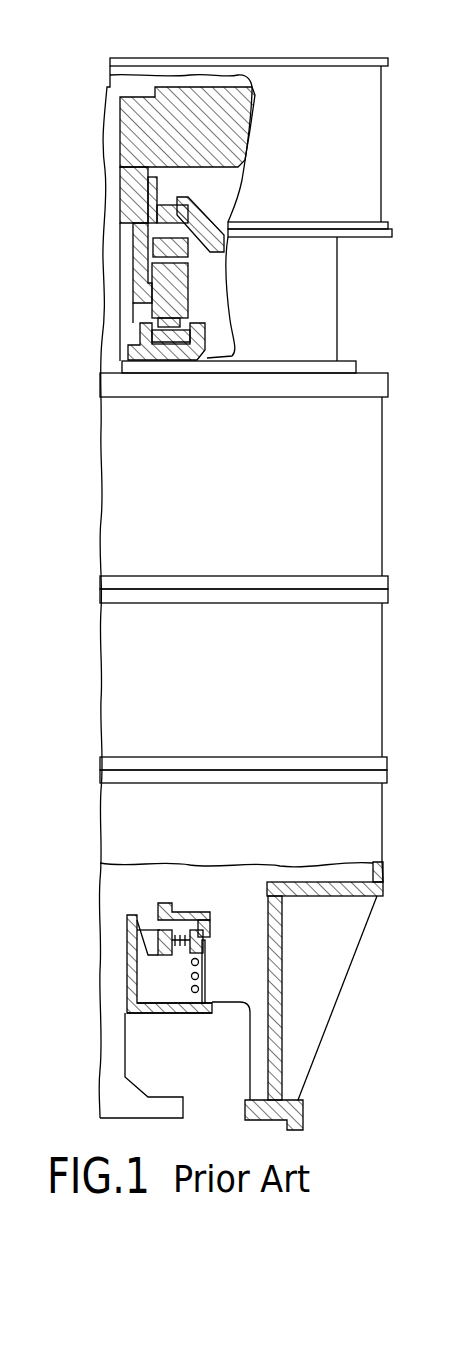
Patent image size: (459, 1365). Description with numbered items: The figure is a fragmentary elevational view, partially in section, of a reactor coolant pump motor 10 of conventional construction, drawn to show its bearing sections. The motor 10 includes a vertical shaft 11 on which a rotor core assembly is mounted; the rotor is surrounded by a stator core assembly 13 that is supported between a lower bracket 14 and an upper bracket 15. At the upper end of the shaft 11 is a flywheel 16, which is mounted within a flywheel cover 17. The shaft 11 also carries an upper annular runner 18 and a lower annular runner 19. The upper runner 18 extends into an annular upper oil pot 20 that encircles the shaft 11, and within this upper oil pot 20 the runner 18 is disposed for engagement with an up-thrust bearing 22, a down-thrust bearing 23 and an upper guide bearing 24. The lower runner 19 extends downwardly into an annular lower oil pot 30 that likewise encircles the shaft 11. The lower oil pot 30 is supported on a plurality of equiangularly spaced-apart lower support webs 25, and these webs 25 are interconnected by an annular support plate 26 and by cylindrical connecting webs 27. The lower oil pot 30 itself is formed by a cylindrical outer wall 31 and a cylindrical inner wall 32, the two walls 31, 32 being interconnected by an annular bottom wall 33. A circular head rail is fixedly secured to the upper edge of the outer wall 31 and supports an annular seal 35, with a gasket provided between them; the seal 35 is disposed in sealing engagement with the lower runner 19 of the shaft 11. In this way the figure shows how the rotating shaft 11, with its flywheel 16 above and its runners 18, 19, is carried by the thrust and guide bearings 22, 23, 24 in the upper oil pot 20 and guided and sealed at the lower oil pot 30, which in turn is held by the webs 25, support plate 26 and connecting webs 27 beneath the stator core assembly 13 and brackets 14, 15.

The reactor coolant pump motor 10 is at (357, 336).
The vertical shaft 11 is at (112, 323).
The stator core assembly 13 is at (357, 658).
The lower bracket 14 is at (367, 820).
The upper bracket 15 is at (360, 503).
The flywheel 16 is at (222, 90).
The flywheel cover 17 is at (373, 122).
The upper annular runner 18 is at (128, 268).
The lower annular runner 19 is at (148, 932).
The upper oil pot 20 is at (323, 267).
The up-thrust bearing 22 is at (200, 312).
The down-thrust bearing 23 is at (200, 276).
The upper guide bearing 24 is at (120, 207).
The lower support webs 25 is at (323, 993).
The annular support plate 26 is at (357, 896).
The cylindrical connecting webs 27 is at (283, 1030).
The lower oil pot 30 is at (157, 1020).
The cylindrical outer wall 31 is at (207, 977).
The cylindrical inner wall 32 is at (127, 998).
The annular bottom wall 33 is at (187, 1013).
The annular seal 35 is at (170, 903).